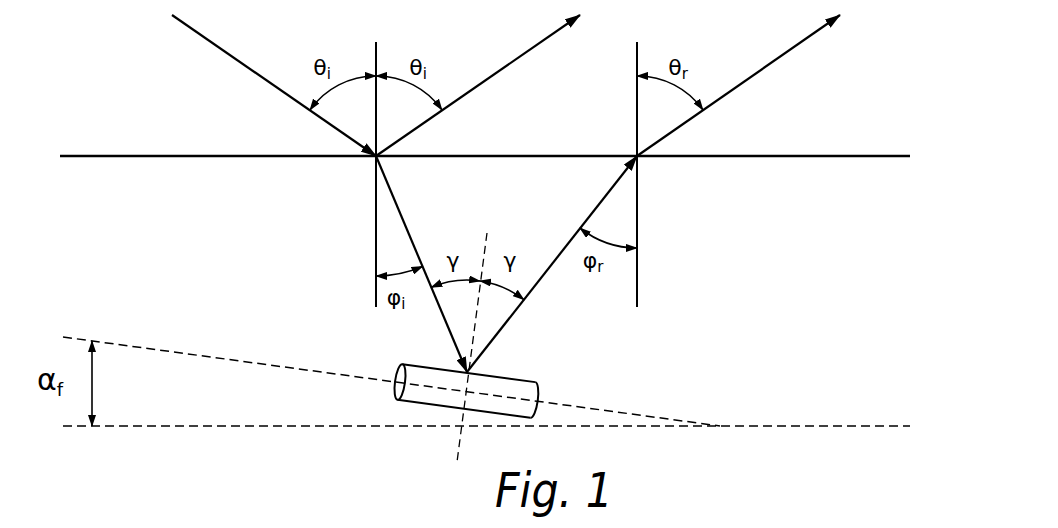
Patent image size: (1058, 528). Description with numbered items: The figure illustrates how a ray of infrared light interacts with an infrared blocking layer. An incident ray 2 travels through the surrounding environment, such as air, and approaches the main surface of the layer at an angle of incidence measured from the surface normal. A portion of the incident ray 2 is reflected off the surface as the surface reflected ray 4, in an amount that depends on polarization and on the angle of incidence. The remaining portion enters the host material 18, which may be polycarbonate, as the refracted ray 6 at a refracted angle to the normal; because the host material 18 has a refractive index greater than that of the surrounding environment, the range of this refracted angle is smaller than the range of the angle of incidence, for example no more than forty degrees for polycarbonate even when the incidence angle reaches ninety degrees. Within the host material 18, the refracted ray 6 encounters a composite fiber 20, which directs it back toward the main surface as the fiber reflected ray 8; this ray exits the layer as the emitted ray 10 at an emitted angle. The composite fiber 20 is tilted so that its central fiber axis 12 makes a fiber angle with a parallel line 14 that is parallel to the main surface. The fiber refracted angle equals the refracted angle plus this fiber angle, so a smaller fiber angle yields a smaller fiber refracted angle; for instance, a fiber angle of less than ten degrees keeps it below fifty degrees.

The incident ray 2 is at (232, 57).
The surface reflected ray 4 is at (515, 60).
The refracted ray 6 is at (402, 215).
The fiber reflected ray 8 is at (540, 280).
The emitted ray 10 is at (778, 59).
The central fiber axis 12 is at (212, 357).
The parallel line 14 is at (860, 427).
The host material 18 is at (853, 264).
The composite fiber 20 is at (432, 400).